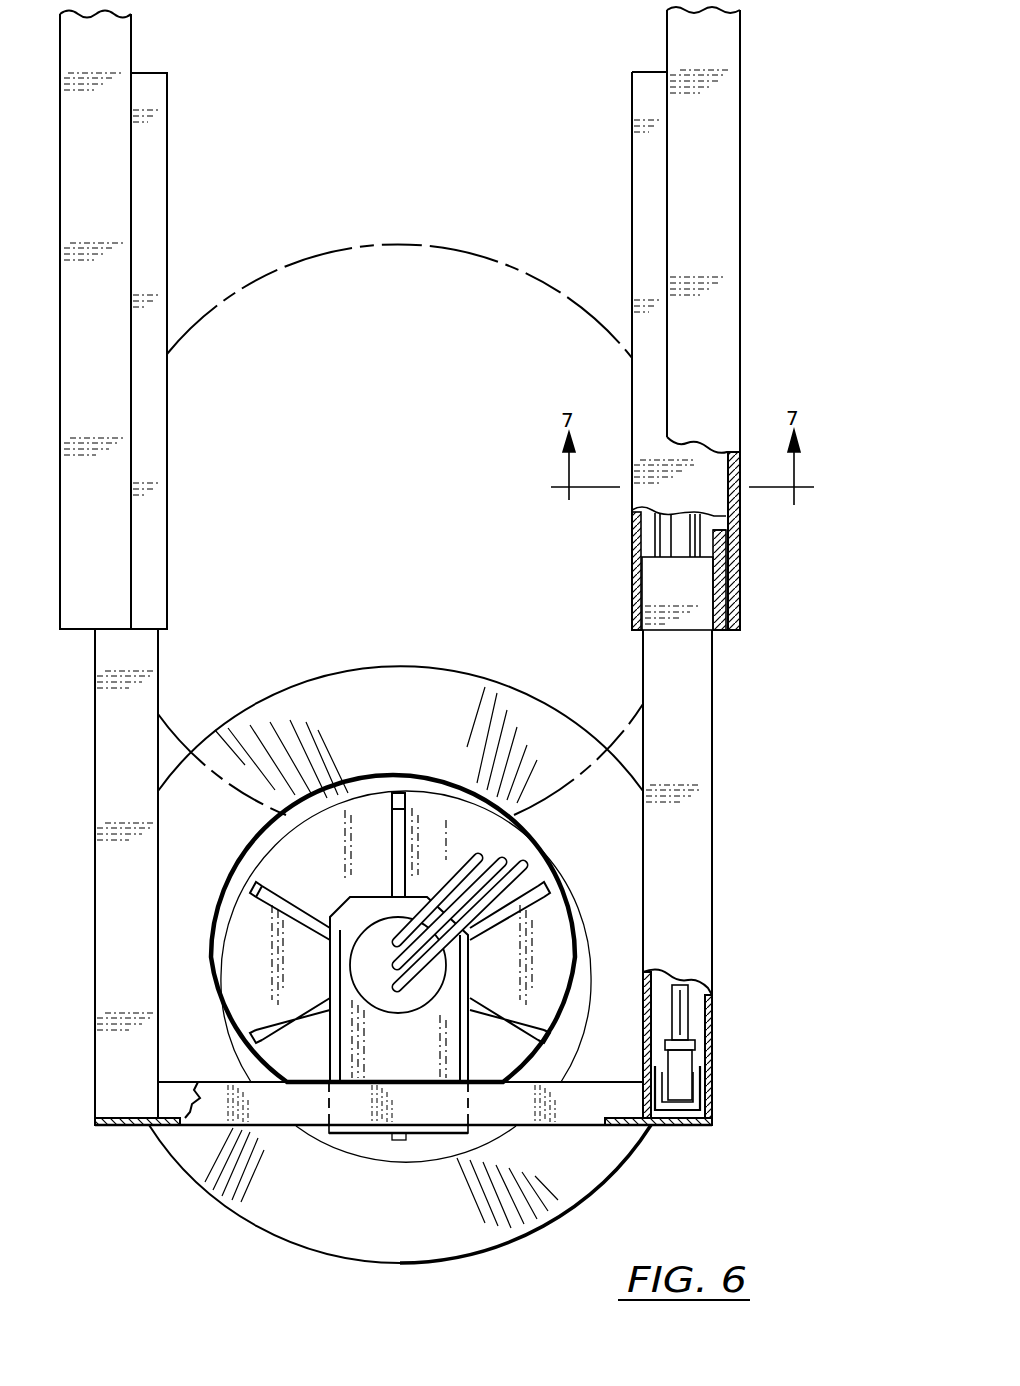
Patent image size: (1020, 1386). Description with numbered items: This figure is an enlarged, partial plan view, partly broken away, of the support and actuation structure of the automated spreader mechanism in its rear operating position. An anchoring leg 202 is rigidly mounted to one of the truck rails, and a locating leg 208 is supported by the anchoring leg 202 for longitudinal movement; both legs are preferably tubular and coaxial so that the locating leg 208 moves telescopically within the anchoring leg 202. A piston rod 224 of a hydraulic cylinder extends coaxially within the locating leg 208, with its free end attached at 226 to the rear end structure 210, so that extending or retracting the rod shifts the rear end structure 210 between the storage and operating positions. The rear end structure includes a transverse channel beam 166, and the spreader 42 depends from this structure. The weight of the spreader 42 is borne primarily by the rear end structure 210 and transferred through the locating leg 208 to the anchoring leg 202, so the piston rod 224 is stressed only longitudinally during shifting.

The spreader 42 is at (235, 1210).
The transverse channel beam 166 is at (738, 200).
The anchoring leg 202 is at (638, 201).
The locating leg 208 is at (705, 730).
The rear end structure 210 is at (714, 1125).
The piston rod 224 is at (666, 533).
The attachment of piston rod free end 226 is at (677, 1084).